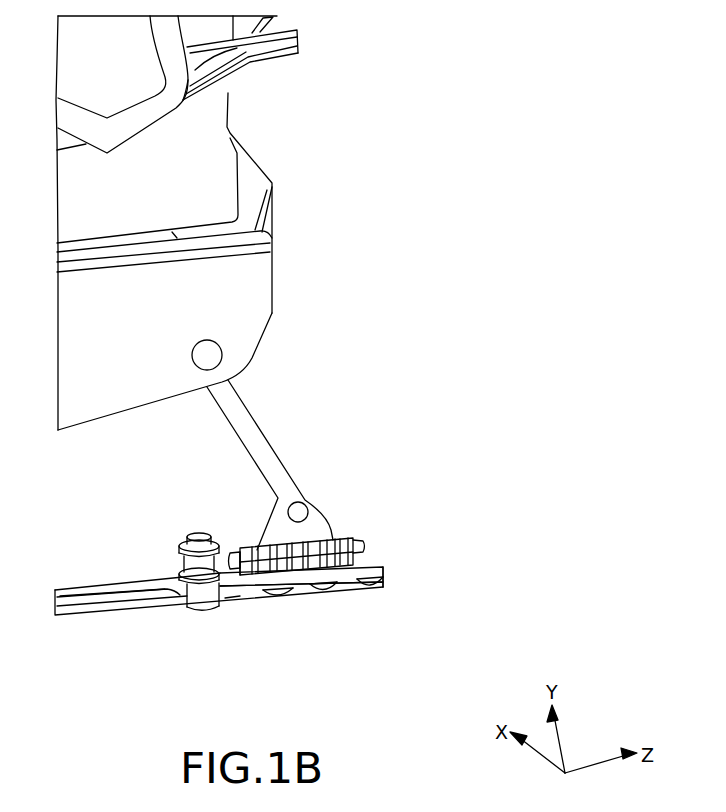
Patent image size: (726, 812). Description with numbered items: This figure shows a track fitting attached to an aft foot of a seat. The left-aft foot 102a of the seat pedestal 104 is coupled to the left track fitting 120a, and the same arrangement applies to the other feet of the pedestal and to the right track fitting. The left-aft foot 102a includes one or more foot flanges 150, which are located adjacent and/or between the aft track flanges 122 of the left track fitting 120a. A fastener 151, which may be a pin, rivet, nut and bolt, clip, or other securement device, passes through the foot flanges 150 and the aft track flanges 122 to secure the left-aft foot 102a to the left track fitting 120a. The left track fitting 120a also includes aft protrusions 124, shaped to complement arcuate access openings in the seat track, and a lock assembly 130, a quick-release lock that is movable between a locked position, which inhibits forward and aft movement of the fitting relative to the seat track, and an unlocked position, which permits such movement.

The seat pedestal 104 is at (235, 328).
The left-aft foot 102a is at (313, 522).
The foot flange 150 is at (328, 552).
The fastener 151 is at (357, 543).
The aft protrusion 124 is at (280, 597).
The left track fitting 120a is at (133, 588).
The lock assembly 130 is at (200, 563).
The aft track flange 122 is at (280, 565).